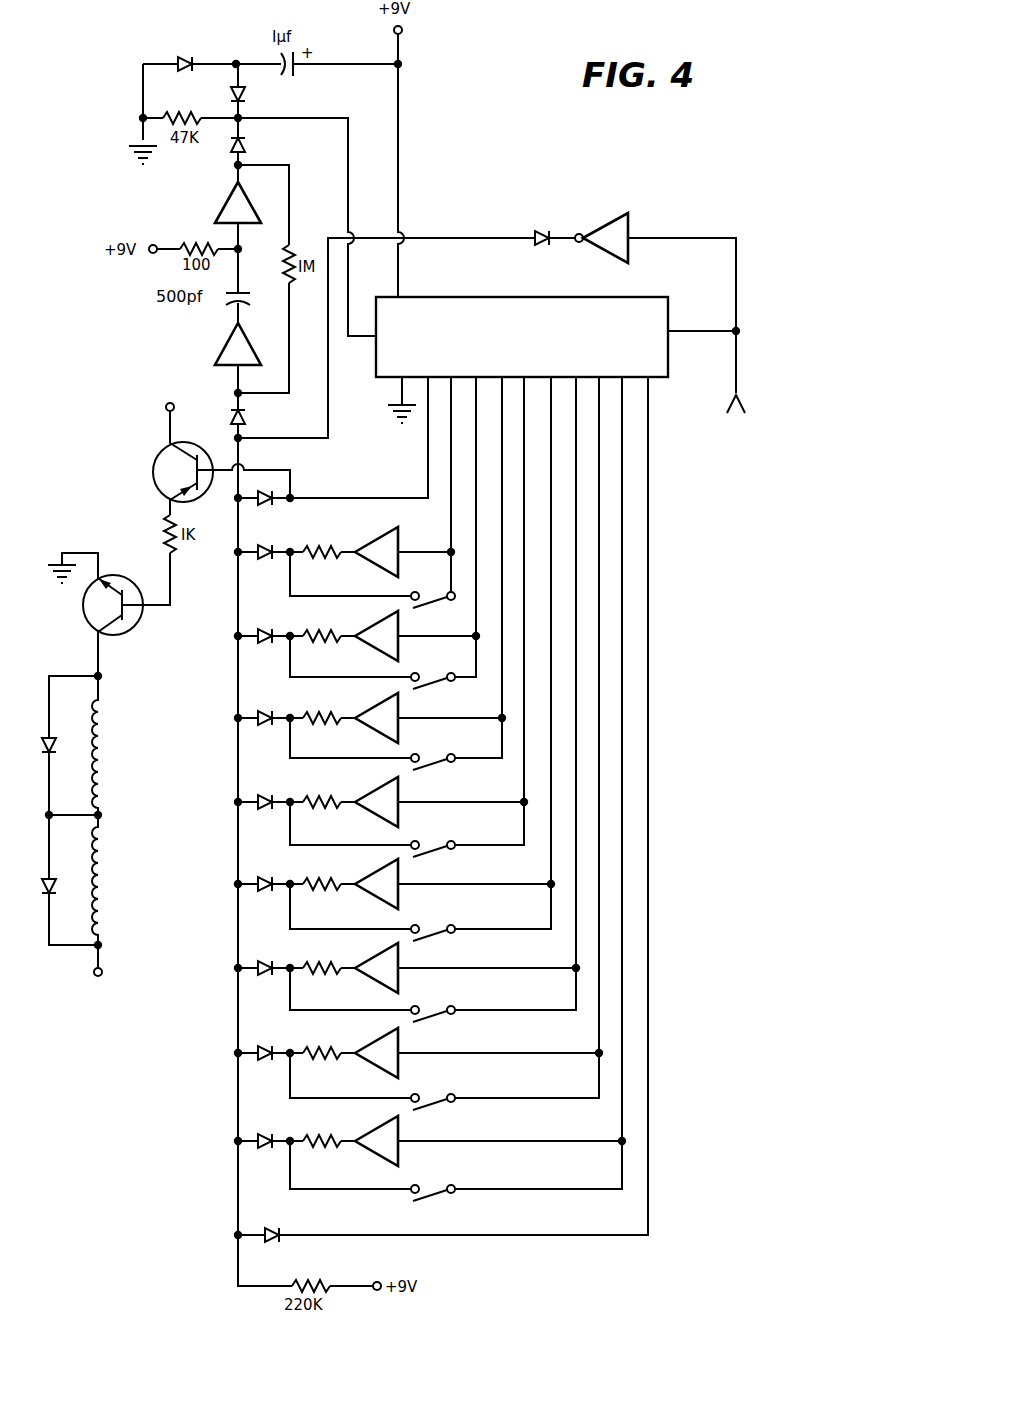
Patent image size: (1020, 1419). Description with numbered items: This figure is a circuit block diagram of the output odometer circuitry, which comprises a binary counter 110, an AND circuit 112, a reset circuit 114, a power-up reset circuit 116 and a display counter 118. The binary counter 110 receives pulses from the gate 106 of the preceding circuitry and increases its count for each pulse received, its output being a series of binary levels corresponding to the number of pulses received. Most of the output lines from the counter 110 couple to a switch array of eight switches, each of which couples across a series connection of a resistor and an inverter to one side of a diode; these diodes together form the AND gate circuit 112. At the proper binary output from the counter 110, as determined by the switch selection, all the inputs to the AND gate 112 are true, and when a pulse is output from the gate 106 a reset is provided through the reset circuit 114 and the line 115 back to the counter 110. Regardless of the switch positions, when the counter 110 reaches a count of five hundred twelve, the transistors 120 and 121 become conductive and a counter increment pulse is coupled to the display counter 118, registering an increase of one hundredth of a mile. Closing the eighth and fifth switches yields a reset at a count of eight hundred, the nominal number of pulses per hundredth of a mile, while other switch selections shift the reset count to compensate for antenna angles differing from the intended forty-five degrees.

The binary counter 110 is at (512, 367).
The AND circuit 112 is at (218, 750).
The reset circuit 114 is at (215, 338).
The line 115 is at (349, 180).
The power-up reset circuit 116 is at (324, 109).
The display counter 118 is at (118, 812).
The transistor 120 is at (160, 487).
The transistor 121 is at (128, 633).
The gate 106 is at (732, 432).